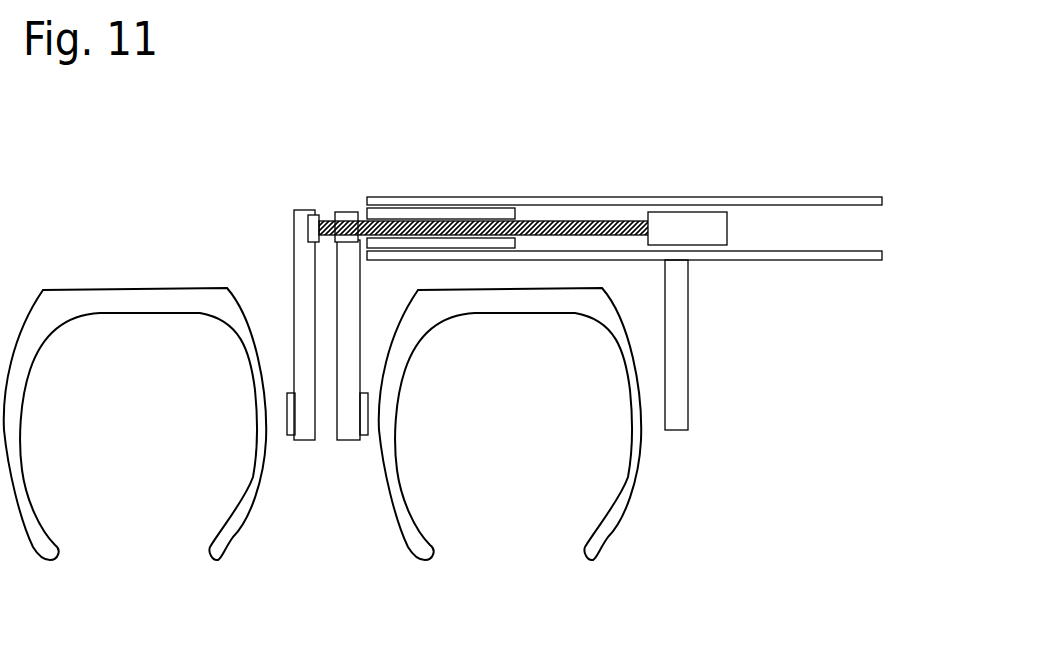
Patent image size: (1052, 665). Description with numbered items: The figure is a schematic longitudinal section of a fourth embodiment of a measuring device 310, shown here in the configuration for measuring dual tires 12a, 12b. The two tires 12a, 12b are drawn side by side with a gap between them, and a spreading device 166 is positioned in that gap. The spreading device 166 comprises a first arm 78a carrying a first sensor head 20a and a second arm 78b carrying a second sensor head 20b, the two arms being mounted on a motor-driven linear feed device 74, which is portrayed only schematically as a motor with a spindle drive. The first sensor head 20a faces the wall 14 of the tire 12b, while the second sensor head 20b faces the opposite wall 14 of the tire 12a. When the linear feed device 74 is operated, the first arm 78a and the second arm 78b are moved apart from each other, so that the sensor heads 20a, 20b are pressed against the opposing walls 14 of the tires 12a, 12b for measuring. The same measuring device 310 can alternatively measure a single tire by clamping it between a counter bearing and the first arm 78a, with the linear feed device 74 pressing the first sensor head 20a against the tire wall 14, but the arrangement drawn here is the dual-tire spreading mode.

The tire 12a is at (55, 300).
The tire 12b is at (634, 496).
The wall 14 is at (258, 430).
The first sensor head 20a is at (367, 436).
The second sensor head 20b is at (288, 436).
The linear feed device 74 is at (656, 212).
The first arm 78a is at (355, 305).
The second arm 78b is at (302, 283).
The spreading device 166 is at (262, 290).
The measuring device 310 is at (731, 136).